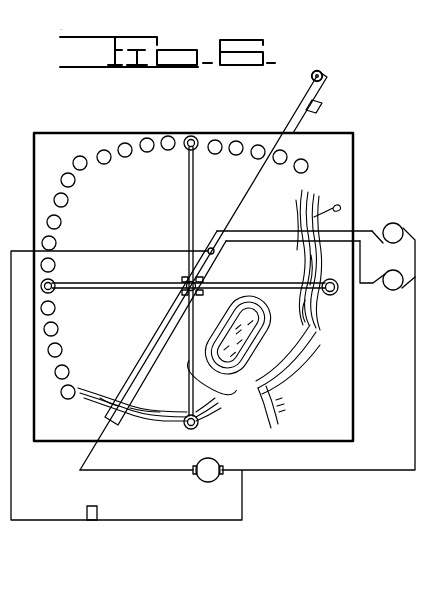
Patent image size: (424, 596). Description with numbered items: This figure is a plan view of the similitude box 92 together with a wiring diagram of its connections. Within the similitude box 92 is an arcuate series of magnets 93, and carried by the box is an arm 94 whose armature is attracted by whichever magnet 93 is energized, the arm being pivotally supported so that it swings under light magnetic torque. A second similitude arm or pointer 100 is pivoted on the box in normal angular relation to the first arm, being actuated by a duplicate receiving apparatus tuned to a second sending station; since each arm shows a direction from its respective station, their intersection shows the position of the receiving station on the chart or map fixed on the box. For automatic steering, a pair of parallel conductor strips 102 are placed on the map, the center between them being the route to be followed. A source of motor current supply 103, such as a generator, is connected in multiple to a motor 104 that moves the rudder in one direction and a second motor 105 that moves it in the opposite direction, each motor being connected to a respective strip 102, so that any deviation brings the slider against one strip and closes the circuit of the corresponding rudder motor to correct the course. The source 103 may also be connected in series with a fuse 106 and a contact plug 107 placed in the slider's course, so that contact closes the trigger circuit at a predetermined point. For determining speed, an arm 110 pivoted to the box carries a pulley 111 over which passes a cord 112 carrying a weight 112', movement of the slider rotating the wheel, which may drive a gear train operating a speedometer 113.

The similitude box 92 is at (66, 133).
The magnets 93 is at (167, 151).
The arm 94 is at (136, 282).
The second similitude arm or pointer 100 is at (195, 186).
The parallel conductor strips 102 is at (150, 384).
The source of motor current supply 103 is at (154, 482).
The motor 104 is at (390, 291).
The second motor 105 is at (396, 223).
The fuse 106 is at (99, 512).
The contact plug 107 is at (215, 252).
The arm 110 is at (298, 126).
The pulley 111 is at (310, 80).
The cord 112 is at (198, 273).
The weight 112' is at (324, 65).
The speedometer 113 is at (323, 105).